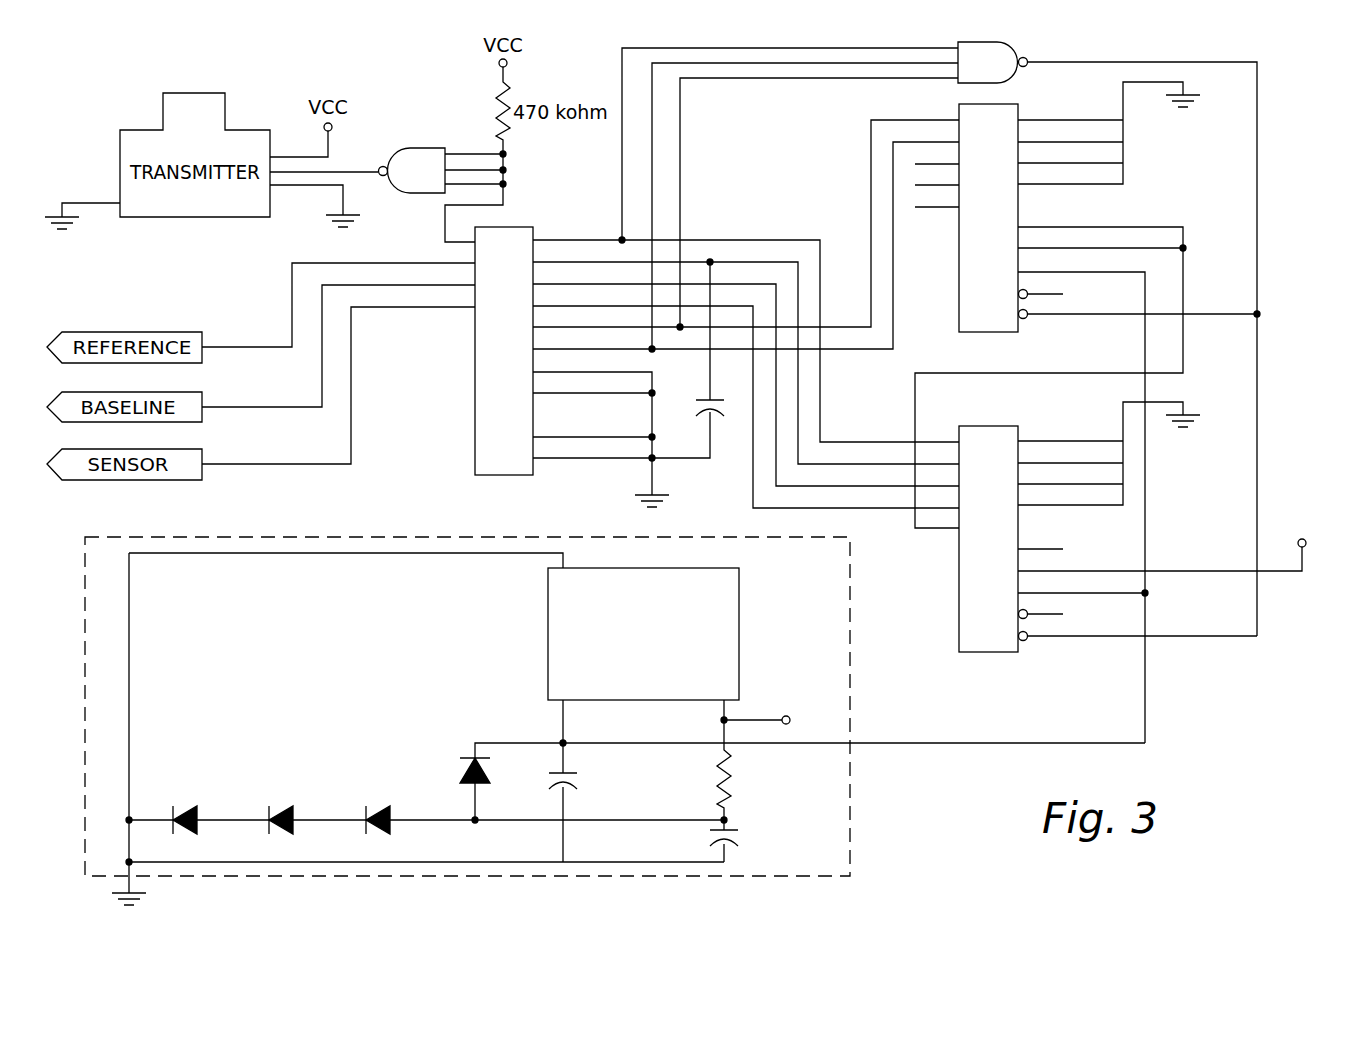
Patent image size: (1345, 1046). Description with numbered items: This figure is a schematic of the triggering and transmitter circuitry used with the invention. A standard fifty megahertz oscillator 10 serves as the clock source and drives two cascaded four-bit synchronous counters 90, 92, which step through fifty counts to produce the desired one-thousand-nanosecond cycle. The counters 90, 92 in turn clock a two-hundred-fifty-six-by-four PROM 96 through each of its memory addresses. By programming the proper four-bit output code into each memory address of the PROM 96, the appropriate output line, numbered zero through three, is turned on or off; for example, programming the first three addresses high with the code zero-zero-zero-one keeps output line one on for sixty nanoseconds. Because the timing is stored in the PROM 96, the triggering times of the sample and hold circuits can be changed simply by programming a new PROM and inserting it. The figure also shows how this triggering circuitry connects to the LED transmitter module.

The oscillator 10 is at (850, 602).
The 4-bit counter 90 is at (959, 622).
The 4-bit counter 92 is at (959, 287).
The PROM 96 is at (475, 416).